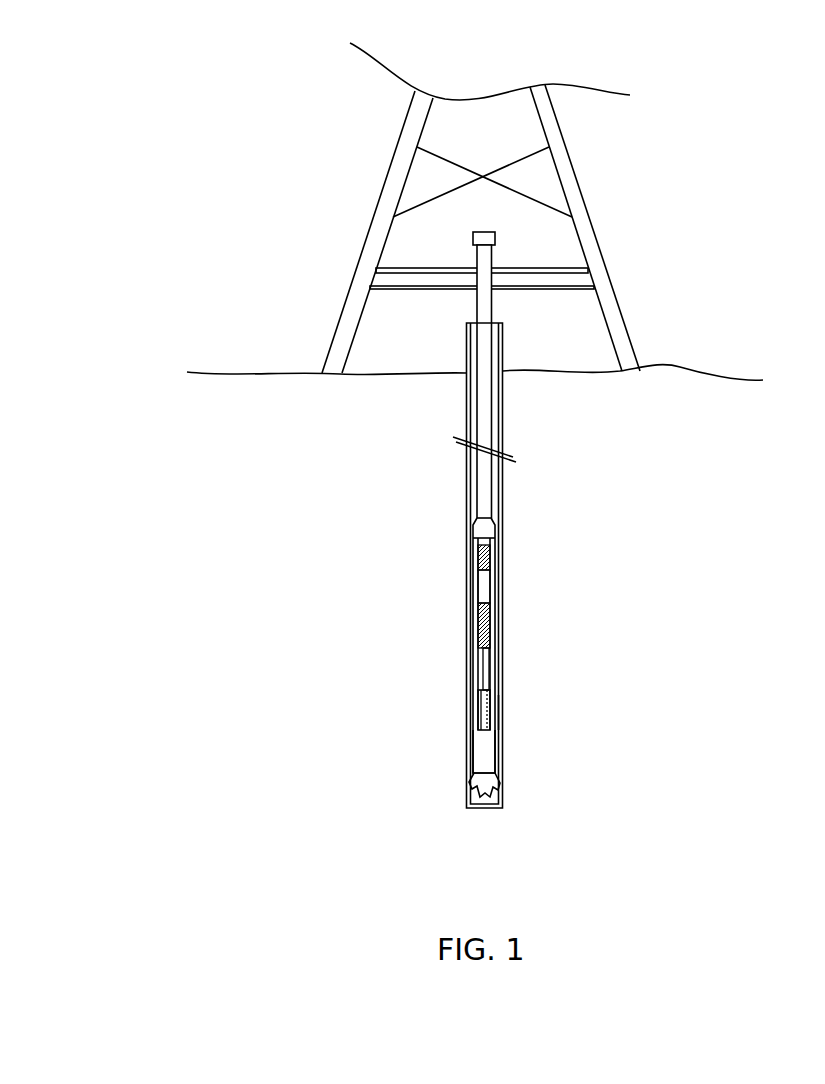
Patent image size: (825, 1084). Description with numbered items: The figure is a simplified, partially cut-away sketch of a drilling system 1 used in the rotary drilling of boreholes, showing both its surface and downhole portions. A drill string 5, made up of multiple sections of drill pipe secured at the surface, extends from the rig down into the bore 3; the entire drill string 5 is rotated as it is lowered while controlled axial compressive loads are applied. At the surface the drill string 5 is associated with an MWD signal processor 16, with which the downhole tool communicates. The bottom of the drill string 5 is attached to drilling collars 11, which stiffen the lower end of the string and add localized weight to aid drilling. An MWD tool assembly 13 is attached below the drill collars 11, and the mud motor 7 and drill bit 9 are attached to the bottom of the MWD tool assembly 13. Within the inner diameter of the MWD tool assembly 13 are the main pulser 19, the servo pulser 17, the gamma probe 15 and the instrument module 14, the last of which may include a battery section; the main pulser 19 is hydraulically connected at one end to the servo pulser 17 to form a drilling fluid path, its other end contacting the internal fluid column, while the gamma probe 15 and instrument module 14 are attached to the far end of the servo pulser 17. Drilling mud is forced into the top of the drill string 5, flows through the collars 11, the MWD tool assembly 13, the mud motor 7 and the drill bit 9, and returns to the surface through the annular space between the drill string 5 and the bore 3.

The drilling system 1 is at (186, 315).
The bore 3 is at (466, 490).
The drill string 5 is at (491, 485).
The mud motor 7 is at (500, 757).
The drill bit 9 is at (468, 795).
The drilling collars 11 is at (472, 548).
The MWD tool assembly 13 is at (518, 718).
The instrument module 14 is at (490, 555).
The gamma probe 15 is at (492, 580).
The MWD signal processor 16 is at (495, 240).
The servo pulser 17 is at (470, 625).
The main pulser 19 is at (477, 700).